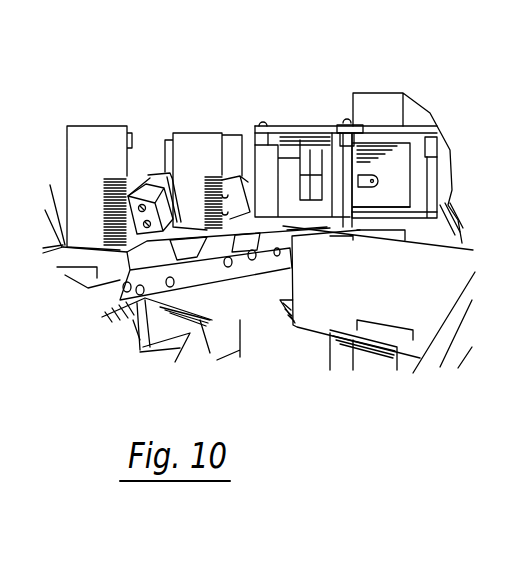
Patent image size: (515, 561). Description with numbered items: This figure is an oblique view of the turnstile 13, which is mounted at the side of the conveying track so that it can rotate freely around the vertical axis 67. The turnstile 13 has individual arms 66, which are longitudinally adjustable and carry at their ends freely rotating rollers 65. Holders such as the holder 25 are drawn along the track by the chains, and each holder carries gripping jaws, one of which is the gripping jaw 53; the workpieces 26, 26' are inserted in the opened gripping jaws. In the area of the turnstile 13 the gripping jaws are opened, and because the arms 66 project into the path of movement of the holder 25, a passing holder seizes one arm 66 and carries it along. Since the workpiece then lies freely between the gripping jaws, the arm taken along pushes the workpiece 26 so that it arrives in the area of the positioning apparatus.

The workpiece 26 is at (97, 146).
The workpiece 26' is at (207, 136).
The gripping jaw 53 is at (140, 182).
The holder 25 is at (208, 294).
The roller 65 is at (262, 123).
The arm 66 is at (377, 130).
The vertical axis 67 is at (338, 158).
The turnstile 13 is at (342, 118).